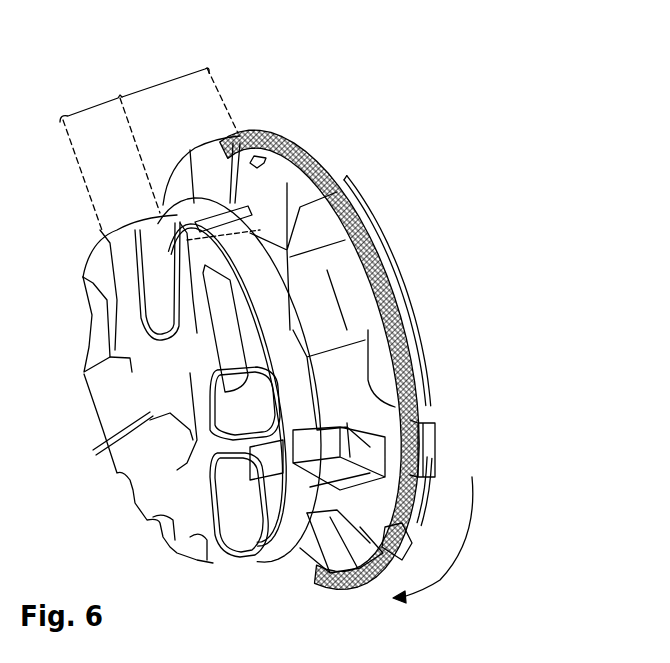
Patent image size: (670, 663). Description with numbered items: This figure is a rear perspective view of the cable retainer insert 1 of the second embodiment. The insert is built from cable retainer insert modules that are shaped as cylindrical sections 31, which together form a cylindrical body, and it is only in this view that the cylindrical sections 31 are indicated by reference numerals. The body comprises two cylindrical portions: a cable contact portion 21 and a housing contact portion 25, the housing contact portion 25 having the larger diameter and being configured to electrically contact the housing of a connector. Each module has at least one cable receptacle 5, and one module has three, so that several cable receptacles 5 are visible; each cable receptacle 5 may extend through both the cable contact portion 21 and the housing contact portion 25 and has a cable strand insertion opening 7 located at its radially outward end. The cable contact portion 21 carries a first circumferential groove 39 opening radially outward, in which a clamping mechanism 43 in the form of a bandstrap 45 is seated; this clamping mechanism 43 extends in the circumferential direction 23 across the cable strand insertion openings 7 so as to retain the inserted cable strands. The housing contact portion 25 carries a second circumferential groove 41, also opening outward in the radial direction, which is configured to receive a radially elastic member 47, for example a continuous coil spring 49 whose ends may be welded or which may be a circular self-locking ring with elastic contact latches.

The cable retainer insert 1 is at (371, 81).
The cable receptacle 5 is at (210, 593).
The cable strand insertion opening 7 is at (270, 382).
The cable contact portion 21 is at (94, 102).
The circumferential direction 23 is at (435, 583).
The housing contact portion 25 is at (167, 80).
The cylindrical section 31 is at (187, 347).
The first circumferential groove 39 is at (298, 308).
The second circumferential groove 41 is at (266, 164).
The clamping mechanism 43 is at (350, 359).
The bandstrap 45 is at (283, 317).
The radially elastic member 47 is at (425, 403).
The continuous coil spring 49 is at (448, 377).